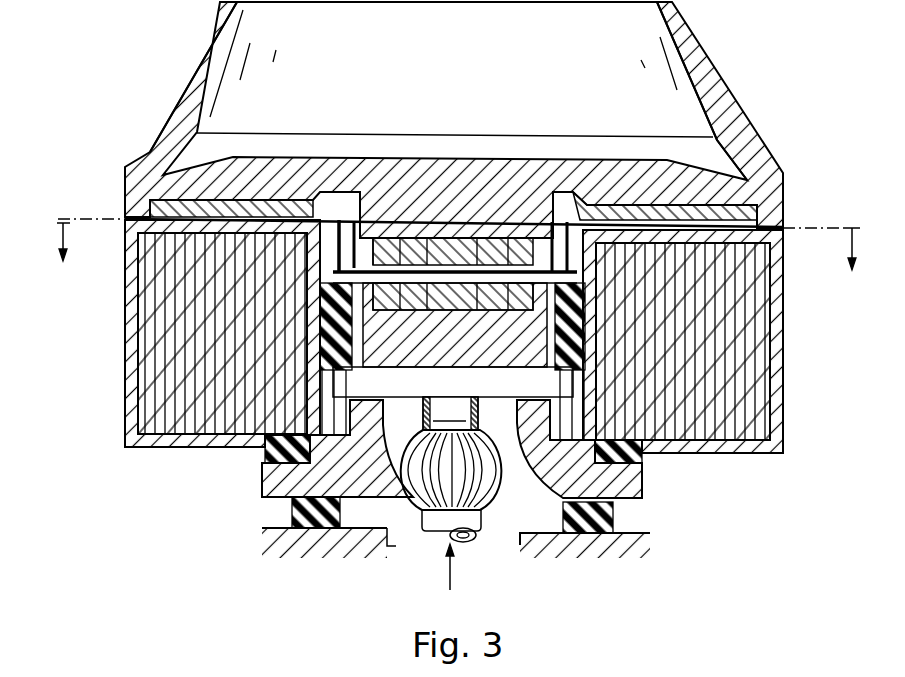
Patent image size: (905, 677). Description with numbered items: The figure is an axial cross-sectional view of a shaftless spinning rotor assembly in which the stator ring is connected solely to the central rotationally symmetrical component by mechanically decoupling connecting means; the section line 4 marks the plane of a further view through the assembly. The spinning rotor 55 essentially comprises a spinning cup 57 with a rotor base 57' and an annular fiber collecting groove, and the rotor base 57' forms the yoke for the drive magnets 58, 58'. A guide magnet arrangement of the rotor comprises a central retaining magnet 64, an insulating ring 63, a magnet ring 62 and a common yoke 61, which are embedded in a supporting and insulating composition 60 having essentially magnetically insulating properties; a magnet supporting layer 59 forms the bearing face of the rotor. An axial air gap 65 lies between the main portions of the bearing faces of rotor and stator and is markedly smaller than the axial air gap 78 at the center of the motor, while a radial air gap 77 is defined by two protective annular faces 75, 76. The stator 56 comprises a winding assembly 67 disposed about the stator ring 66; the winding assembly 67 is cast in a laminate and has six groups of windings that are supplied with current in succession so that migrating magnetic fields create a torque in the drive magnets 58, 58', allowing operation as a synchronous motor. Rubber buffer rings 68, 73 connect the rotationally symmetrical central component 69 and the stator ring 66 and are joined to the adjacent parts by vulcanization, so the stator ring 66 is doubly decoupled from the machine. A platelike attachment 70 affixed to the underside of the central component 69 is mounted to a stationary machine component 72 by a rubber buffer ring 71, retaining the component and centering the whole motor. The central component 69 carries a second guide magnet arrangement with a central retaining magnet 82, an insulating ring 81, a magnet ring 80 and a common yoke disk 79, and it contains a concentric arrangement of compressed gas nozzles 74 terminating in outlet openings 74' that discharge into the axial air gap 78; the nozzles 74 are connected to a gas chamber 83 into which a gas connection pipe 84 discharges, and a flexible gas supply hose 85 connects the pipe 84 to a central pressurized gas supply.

The section line 4 is at (457, 239).
The spinning rotor 55 is at (742, 70).
The stator 56 is at (790, 338).
The spinning cup 57 is at (485, 59).
The rotor base 57' is at (455, 133).
The drive magnet 58 is at (474, 120).
The drive magnet 58' is at (127, 174).
The magnet supporting layer 59 is at (785, 205).
The supporting and insulating composition 60 is at (504, 232).
The module layer 61 is at (460, 232).
The magnet ring 62 is at (400, 235).
The insulating ring 63 is at (422, 232).
The central retaining magnet 64 is at (472, 232).
The axial air gap 65 is at (787, 232).
The stator ring 66 is at (147, 314).
The winding assembly 67 is at (130, 363).
The rubber buffer ring 68 is at (268, 452).
The rotationally symmetrical central component 69 is at (507, 442).
The platelike attachment 70 is at (541, 497).
The rubber buffer ring 71 is at (345, 505).
The stationary machine component 72 is at (300, 537).
The rubber buffer ring 73 is at (362, 381).
The compressed gas nozzles 74 is at (453, 382).
The outlet openings 74' is at (454, 172).
The protective annular face 75 is at (333, 215).
The protective annular face 76 is at (348, 228).
The radial air gap 77 is at (563, 232).
The axial air gap 78 is at (492, 232).
The common yoke disk 79 is at (448, 295).
The magnet ring 80 is at (388, 312).
The insulating ring 81 is at (412, 307).
The central retaining magnet 82 is at (517, 284).
The gas chamber 83 is at (413, 385).
The gas connection pipe 84 is at (450, 413).
The flexible gas supply hose 85 is at (448, 490).